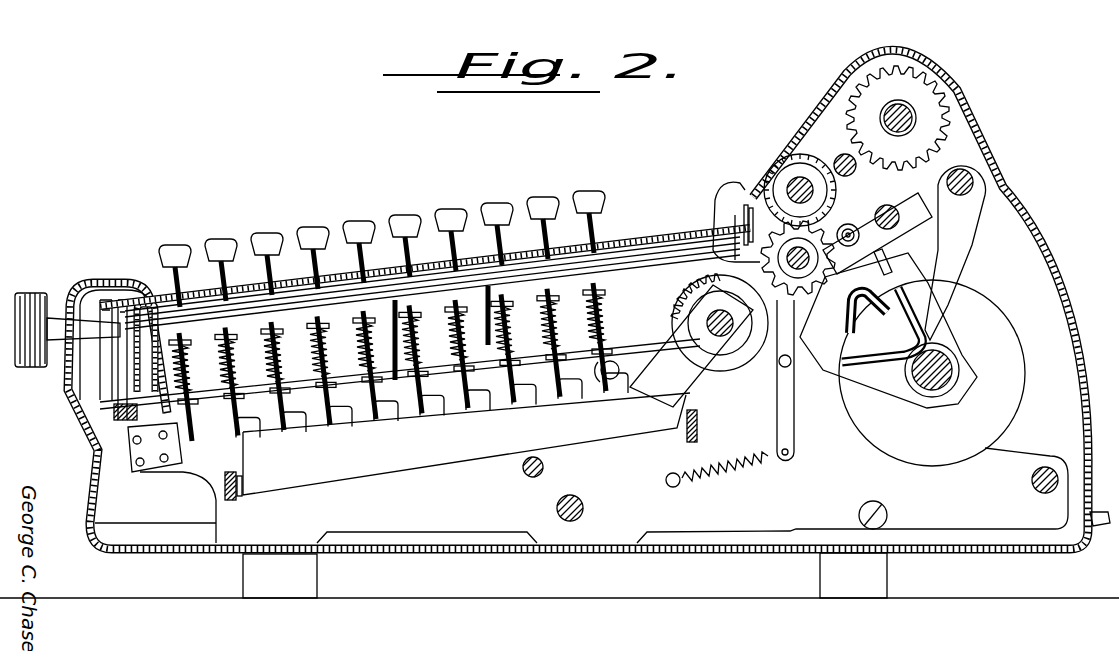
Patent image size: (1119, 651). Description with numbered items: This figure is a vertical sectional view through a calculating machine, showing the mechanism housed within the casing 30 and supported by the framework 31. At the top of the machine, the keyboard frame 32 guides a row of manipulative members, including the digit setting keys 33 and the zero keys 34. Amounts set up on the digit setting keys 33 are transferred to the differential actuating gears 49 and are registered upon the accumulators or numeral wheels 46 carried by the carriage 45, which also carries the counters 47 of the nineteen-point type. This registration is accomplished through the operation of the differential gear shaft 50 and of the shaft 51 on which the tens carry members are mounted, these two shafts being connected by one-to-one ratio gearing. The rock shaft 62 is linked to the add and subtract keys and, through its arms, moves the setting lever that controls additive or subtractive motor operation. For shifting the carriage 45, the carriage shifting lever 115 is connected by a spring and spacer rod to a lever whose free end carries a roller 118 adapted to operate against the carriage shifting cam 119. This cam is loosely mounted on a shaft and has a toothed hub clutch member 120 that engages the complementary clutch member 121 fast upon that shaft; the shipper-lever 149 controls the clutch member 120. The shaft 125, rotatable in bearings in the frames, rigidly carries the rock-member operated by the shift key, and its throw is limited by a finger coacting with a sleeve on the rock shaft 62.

The casing 30 is at (494, 550).
The framework 31 is at (581, 411).
The keyboard frame 32 is at (690, 228).
The digit setting keys 33 is at (541, 199).
The zero keys 34 is at (176, 241).
The carriage 45 is at (815, 117).
The accumulators 46 is at (780, 157).
The counters 47 is at (852, 82).
The differential actuating gears 49 is at (691, 290).
The differential gear shaft 50 is at (712, 312).
The shaft 51 is at (945, 375).
The rock shaft 62 is at (533, 458).
The carriage shifting lever 115 is at (100, 382).
The roller 118 is at (140, 414).
The carriage shifting cam 119 is at (120, 393).
The toothed hub clutch member 120 is at (97, 284).
The complementary clutch member 121 is at (77, 300).
The shaft 125 is at (572, 522).
The shipper-lever 149 is at (143, 300).